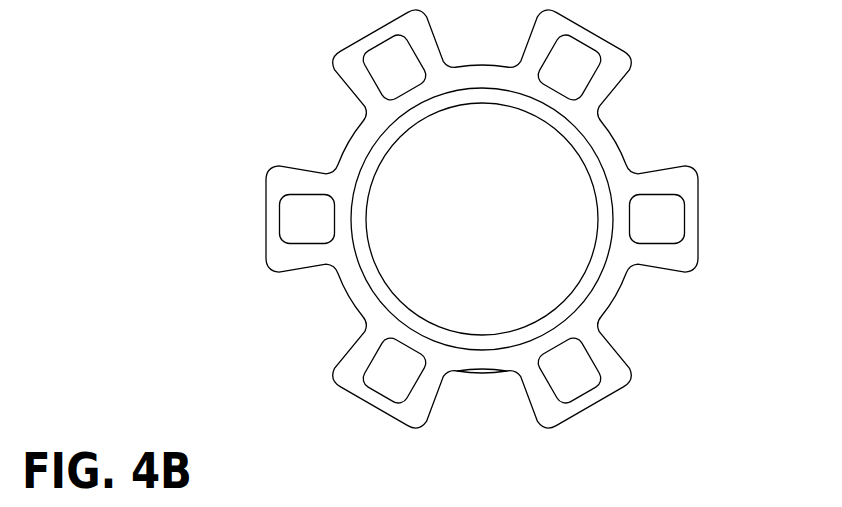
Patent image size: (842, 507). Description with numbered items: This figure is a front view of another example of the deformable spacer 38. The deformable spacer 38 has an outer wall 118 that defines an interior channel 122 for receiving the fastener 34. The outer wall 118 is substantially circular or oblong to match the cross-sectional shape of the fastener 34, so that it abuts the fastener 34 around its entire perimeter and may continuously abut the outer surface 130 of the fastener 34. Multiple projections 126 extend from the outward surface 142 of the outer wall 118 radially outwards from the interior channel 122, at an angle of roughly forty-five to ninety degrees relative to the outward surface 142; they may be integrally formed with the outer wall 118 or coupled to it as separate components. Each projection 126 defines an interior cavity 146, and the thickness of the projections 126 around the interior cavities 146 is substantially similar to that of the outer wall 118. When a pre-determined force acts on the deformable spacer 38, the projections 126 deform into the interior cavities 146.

The fastener 34 is at (423, 160).
The deformable spacer 38 is at (652, 105).
The outer wall 118 is at (603, 291).
The interior channel 122 is at (608, 164).
The projection 126 is at (632, 373).
The outer surface 130 is at (368, 289).
The outward surface 142 is at (488, 375).
The interior cavity 146 is at (656, 223).